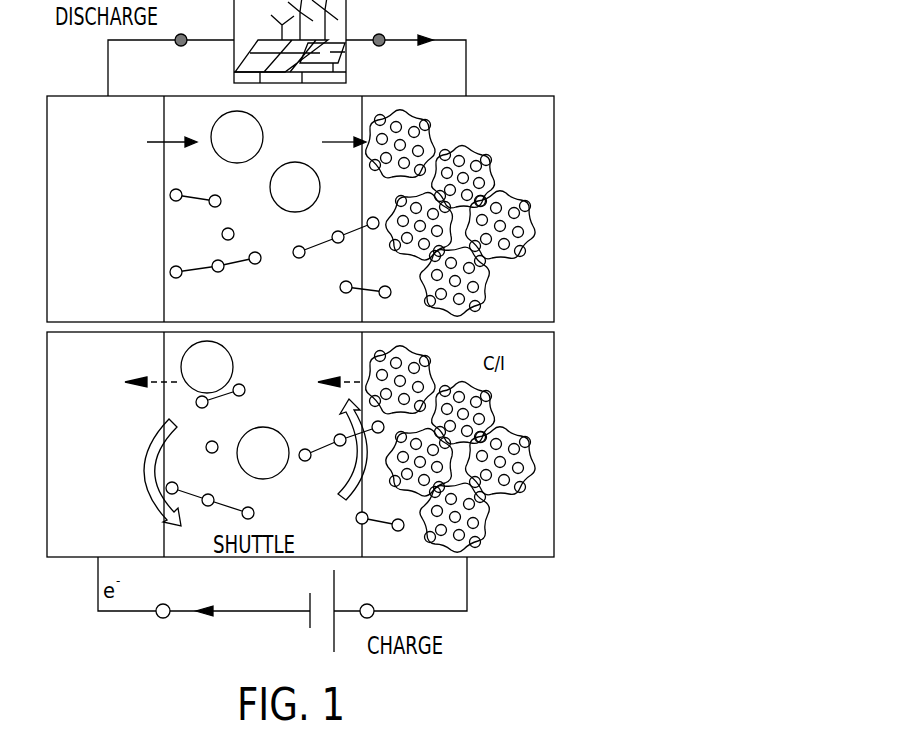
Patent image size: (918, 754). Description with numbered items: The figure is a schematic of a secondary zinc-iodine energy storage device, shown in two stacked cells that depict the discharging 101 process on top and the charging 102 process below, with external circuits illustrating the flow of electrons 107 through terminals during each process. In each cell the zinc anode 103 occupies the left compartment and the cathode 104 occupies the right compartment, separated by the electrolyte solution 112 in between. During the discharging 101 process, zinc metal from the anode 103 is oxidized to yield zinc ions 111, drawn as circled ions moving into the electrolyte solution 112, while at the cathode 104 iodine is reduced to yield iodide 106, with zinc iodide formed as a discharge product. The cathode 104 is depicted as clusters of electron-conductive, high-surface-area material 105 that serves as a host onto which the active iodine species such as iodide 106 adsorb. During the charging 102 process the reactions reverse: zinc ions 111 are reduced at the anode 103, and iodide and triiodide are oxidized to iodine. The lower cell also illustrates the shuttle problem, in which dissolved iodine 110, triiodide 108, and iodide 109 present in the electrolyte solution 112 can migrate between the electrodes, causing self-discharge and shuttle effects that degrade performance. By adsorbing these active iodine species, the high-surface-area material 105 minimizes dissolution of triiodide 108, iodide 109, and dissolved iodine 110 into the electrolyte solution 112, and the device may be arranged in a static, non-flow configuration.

The discharging process 101 is at (608, 219).
The charging process 102 is at (608, 455).
The anode 103 is at (111, 148).
The cathode 104 is at (540, 312).
The electron-conductive, high-surface-area material 105 is at (479, 213).
The iodide 106 is at (528, 231).
The electrons 107 is at (385, 36).
The triiodide 108 is at (172, 270).
The iodide in the electrolyte 109 is at (222, 234).
The dissolved iodine 110 is at (172, 192).
The zinc ions 111 is at (184, 365).
The electrolyte solution 112 is at (277, 310).